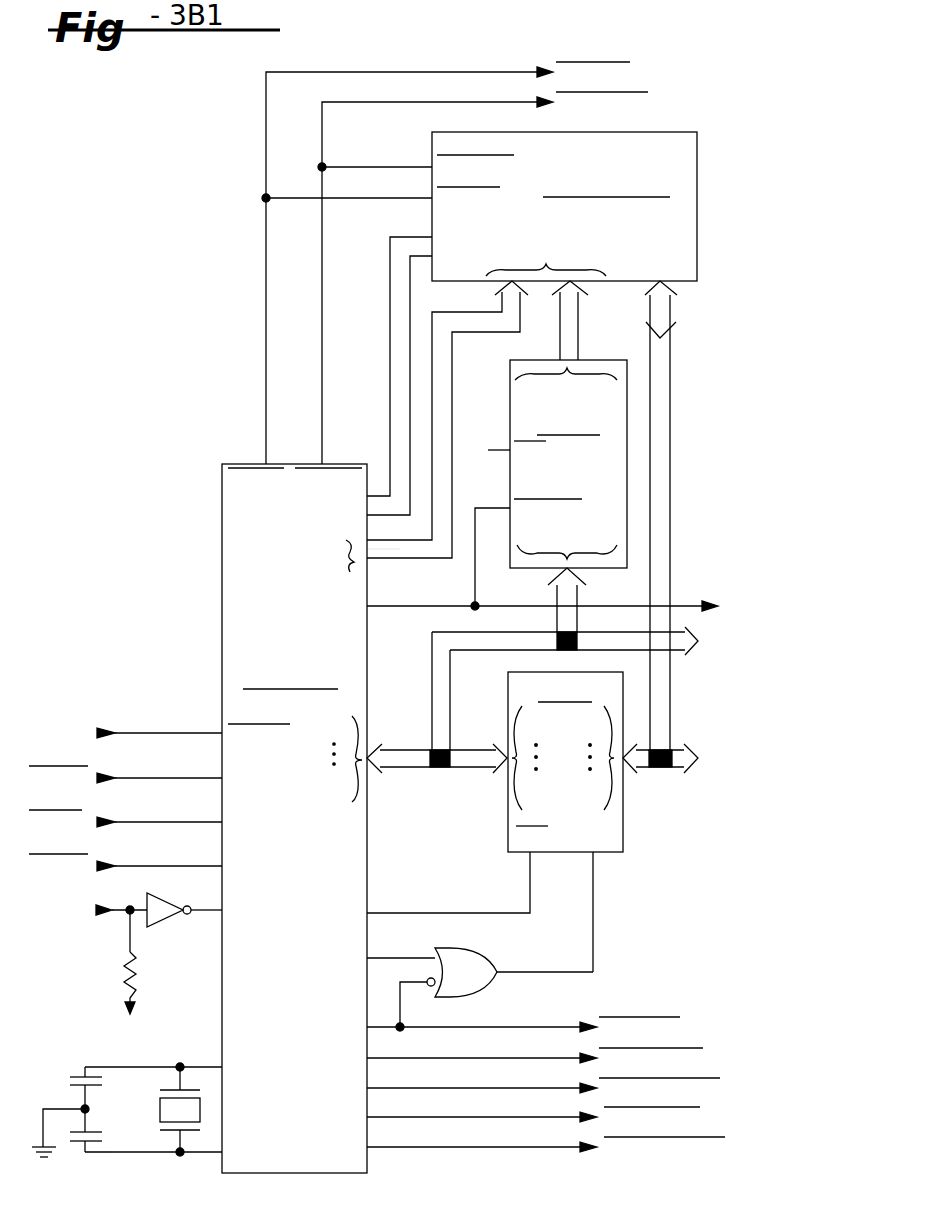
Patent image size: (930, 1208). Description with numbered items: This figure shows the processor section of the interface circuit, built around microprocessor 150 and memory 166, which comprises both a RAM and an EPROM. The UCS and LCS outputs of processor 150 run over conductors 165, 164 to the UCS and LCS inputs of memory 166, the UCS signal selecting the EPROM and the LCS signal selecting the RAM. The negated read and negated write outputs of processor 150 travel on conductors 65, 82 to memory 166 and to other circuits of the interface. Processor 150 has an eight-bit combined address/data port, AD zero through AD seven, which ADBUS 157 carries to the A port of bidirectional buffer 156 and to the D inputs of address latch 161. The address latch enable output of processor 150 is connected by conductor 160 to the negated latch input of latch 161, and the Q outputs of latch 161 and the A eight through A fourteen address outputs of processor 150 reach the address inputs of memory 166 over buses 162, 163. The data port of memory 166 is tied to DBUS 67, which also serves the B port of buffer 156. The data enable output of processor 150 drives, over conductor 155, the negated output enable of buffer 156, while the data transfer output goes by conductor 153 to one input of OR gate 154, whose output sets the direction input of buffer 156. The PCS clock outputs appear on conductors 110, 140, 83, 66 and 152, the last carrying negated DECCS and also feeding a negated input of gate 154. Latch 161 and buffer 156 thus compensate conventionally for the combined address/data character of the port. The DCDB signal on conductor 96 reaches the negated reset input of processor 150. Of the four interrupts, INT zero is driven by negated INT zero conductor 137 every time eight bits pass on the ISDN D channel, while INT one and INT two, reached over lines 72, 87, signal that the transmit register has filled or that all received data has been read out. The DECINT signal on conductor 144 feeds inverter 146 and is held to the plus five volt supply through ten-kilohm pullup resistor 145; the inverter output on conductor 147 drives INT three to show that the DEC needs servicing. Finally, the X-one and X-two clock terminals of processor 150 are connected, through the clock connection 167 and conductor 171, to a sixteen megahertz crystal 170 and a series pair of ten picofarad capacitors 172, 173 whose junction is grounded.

The microprocessor 150 is at (222, 612).
The memory 166 is at (486, 128).
The conductor 65 is at (392, 74).
The conductor 82 is at (396, 104).
The conductor 165 is at (390, 368).
The conductor 164 is at (408, 294).
The bus 163 is at (432, 566).
The bus 162 is at (578, 326).
The DBUS 67 is at (670, 784).
The address latch 161 is at (596, 585).
The conductor 160 is at (426, 616).
The ADBUS 157 is at (393, 770).
The bidirectional buffer 156 is at (606, 860).
The conductor 155 is at (450, 909).
The conductor 153 is at (376, 952).
The OR gate 154 is at (472, 952).
The conductor 152 is at (416, 1034).
The conductor 66 is at (408, 1062).
The conductor 83 is at (406, 1092).
The conductor 140 is at (414, 1122).
The conductor 110 is at (414, 1152).
The conductor 96 is at (168, 732).
The negated INT0 conductor 137 is at (173, 777).
The interrupt 1 line 72 is at (164, 821).
The interrupt 2 line 87 is at (168, 865).
The conductor 144 is at (126, 909).
The inverter 146 is at (160, 898).
The conductor 147 is at (204, 912).
The pullup resistor 145 is at (139, 973).
The crystal oscillator circuit 167 is at (108, 1066).
The capacitor 172 is at (70, 1080).
The capacitor 173 is at (68, 1138).
The conductor 171 is at (126, 1152).
The crystal 170 is at (160, 1110).